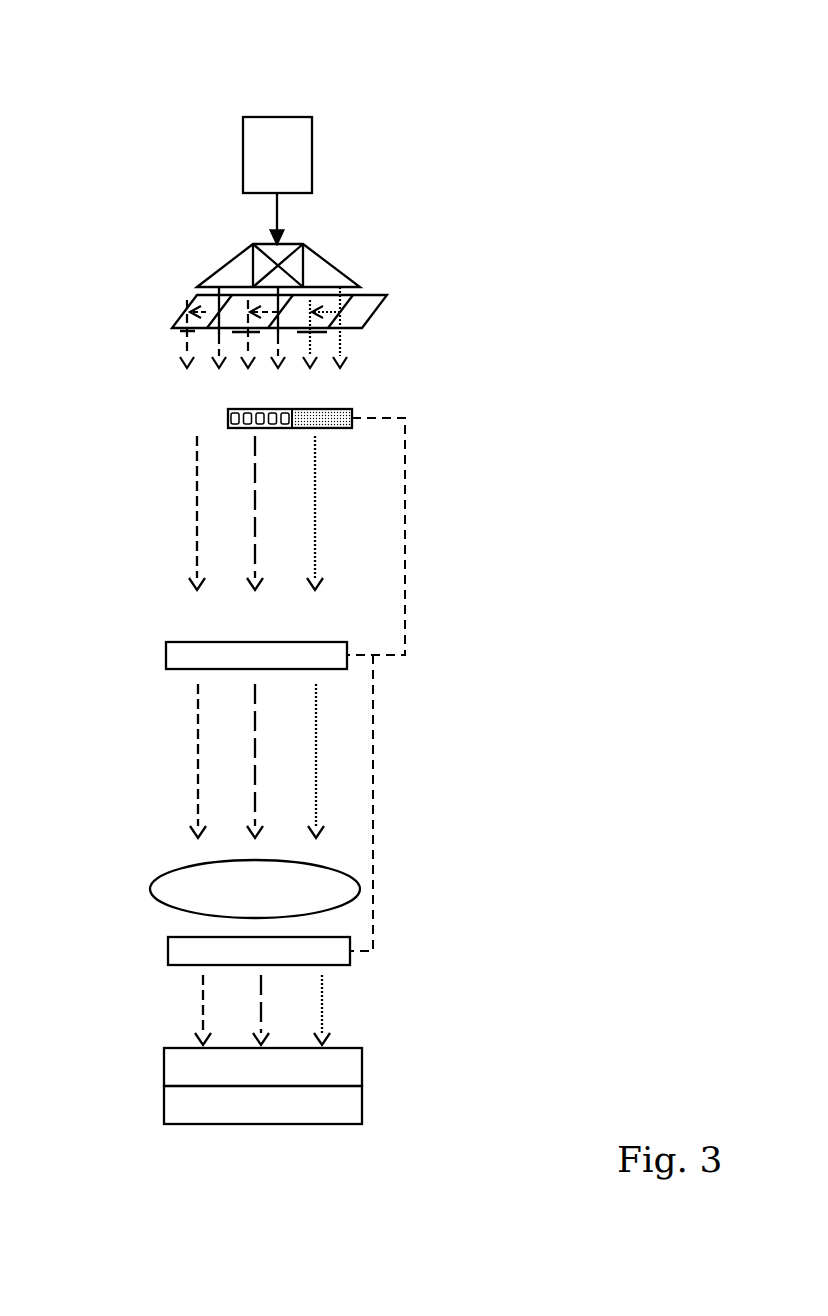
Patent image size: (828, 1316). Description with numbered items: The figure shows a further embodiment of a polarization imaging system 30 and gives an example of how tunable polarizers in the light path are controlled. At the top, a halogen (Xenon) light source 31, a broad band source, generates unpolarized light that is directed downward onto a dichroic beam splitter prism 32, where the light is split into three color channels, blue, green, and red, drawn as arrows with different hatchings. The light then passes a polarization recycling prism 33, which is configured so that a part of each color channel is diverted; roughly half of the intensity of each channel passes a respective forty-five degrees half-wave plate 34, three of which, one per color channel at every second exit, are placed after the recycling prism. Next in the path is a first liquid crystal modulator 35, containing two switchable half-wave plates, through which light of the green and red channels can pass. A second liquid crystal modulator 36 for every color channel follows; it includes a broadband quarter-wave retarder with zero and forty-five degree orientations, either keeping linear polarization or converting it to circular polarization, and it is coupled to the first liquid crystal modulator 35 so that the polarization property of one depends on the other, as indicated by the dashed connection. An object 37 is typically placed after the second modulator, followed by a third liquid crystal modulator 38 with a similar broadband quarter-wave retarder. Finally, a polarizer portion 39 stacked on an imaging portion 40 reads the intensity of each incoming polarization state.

The polarization imaging system 30 is at (275, 56).
The halogen (Xenon) light source 31 is at (243, 143).
The dichroic beam splitter prism 32 is at (349, 279).
The polarization recycling prism 33 is at (376, 308).
The forty-five degrees λ/2-waveplate 34 is at (176, 334).
The first liquid crystal modulator 35 is at (338, 409).
The second liquid crystal modulator 36 is at (180, 642).
The object 37 is at (150, 889).
The third liquid crystal modulator 38 is at (168, 947).
The polarizer portion 39 is at (164, 1064).
The imaging portion 40 is at (164, 1097).